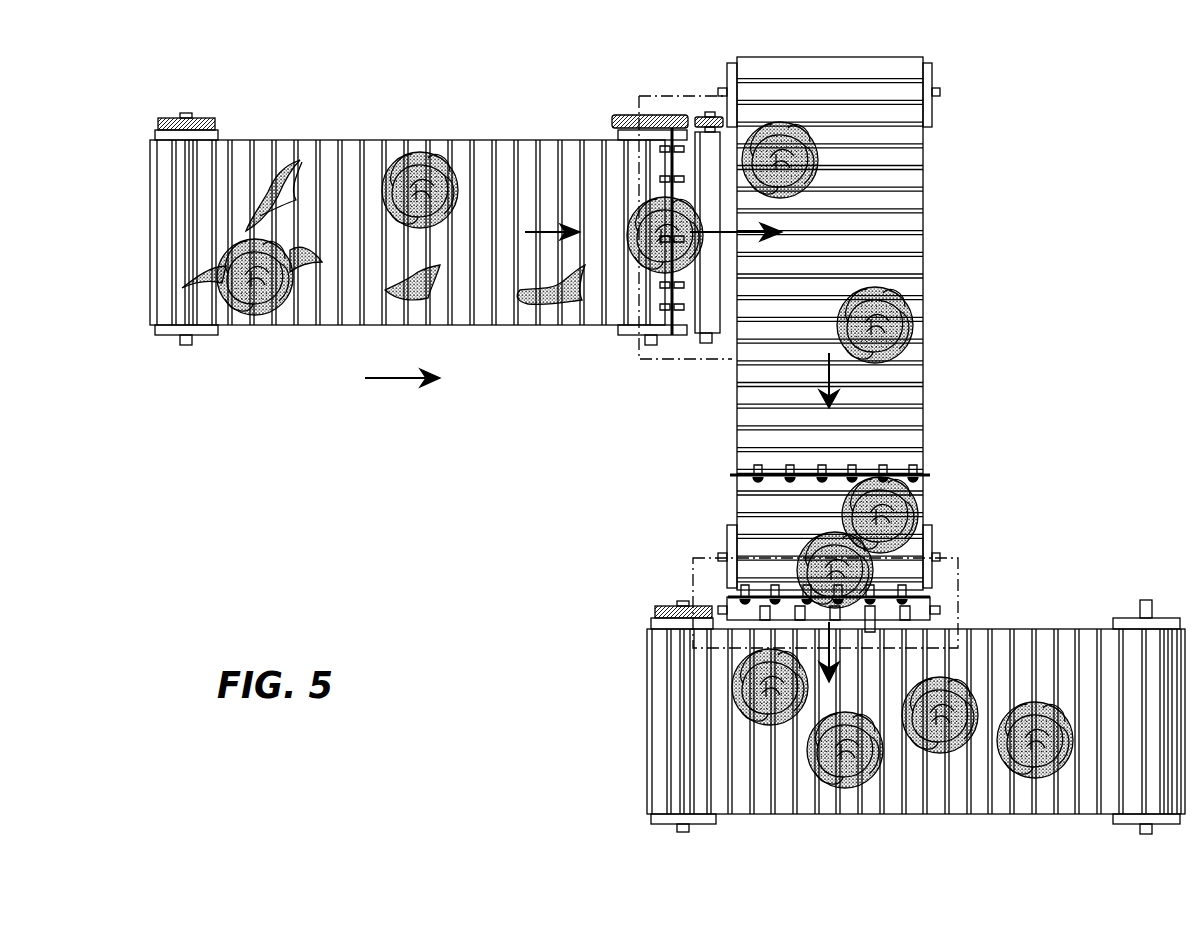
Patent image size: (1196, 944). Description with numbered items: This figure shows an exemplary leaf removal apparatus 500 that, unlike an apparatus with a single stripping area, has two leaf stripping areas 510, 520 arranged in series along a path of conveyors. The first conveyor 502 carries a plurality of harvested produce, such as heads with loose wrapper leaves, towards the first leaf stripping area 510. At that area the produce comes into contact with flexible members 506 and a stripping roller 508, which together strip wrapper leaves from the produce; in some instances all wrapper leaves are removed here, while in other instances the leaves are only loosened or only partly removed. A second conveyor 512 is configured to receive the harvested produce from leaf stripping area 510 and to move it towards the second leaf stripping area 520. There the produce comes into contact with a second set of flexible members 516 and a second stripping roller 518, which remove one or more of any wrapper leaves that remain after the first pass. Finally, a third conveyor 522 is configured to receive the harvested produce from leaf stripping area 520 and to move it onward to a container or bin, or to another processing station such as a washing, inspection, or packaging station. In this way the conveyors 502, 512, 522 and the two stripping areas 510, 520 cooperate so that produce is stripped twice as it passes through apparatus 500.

The leaf removal apparatus 500 is at (248, 83).
The conveyor 502 is at (356, 141).
The flexible members 506 is at (660, 180).
The stripping roller 508 is at (700, 330).
The leaf stripping area 510 is at (677, 95).
The conveyor 512 is at (918, 195).
The flexible members 516 is at (925, 600).
The stripping roller 518 is at (935, 610).
The leaf stripping area 520 is at (958, 566).
The conveyor 522 is at (672, 698).